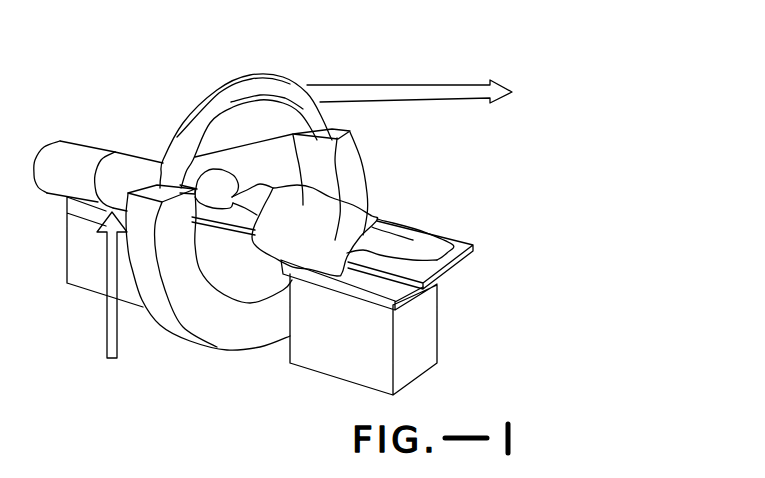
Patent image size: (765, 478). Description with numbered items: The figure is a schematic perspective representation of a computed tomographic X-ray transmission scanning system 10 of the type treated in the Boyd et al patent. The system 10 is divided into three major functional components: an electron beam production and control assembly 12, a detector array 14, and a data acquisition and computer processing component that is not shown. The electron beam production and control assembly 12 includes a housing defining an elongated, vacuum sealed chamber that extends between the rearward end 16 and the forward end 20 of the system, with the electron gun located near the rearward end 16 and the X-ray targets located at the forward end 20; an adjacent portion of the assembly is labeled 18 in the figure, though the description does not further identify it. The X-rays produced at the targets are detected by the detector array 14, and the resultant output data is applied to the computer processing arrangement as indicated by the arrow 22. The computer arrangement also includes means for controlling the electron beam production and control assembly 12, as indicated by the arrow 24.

The computed tomographic X-ray transmission scanning system 10 is at (562, 110).
The electron beam production and control assembly 12 is at (170, 352).
The detector array 14 is at (298, 80).
The rearward end 16 is at (68, 142).
The support cylinder 18 is at (133, 153).
The forward end 20 is at (227, 328).
The arrow 22 is at (403, 92).
The arrow 24 is at (106, 322).